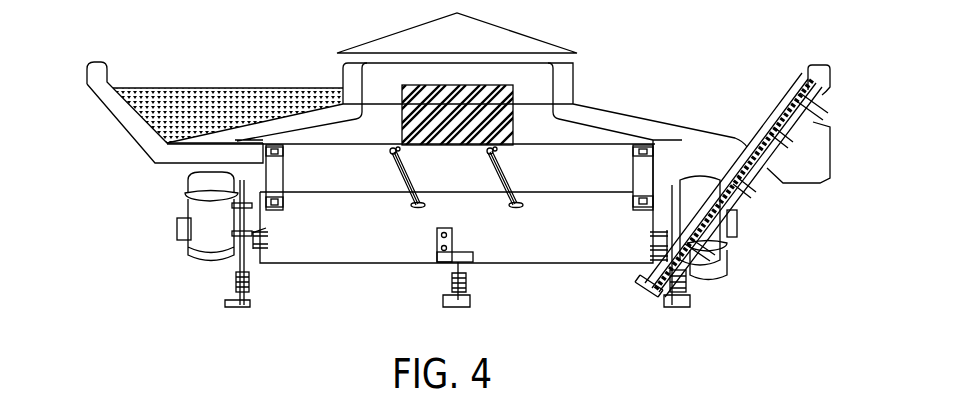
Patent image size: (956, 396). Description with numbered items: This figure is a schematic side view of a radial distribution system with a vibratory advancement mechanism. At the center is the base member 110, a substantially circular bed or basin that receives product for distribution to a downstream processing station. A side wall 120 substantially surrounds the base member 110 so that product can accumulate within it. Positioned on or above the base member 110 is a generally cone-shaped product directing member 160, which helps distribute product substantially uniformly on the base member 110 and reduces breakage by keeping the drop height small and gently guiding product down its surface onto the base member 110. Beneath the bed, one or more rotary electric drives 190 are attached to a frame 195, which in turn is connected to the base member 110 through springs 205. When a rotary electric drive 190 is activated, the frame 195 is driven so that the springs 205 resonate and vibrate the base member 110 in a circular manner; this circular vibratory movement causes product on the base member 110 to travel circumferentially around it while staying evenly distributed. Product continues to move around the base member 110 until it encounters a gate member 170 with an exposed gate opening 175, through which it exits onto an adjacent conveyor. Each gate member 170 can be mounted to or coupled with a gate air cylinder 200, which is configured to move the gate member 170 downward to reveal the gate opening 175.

The base member 110 is at (290, 123).
The side wall 120 is at (117, 117).
The product directing member 160 is at (512, 42).
The gate member 170 is at (755, 180).
The gate opening 175 is at (841, 186).
The rotary electric drive 190 is at (203, 282).
The frame 195 is at (303, 265).
The gate air cylinder 200 is at (505, 309).
The spring 205 is at (395, 164).